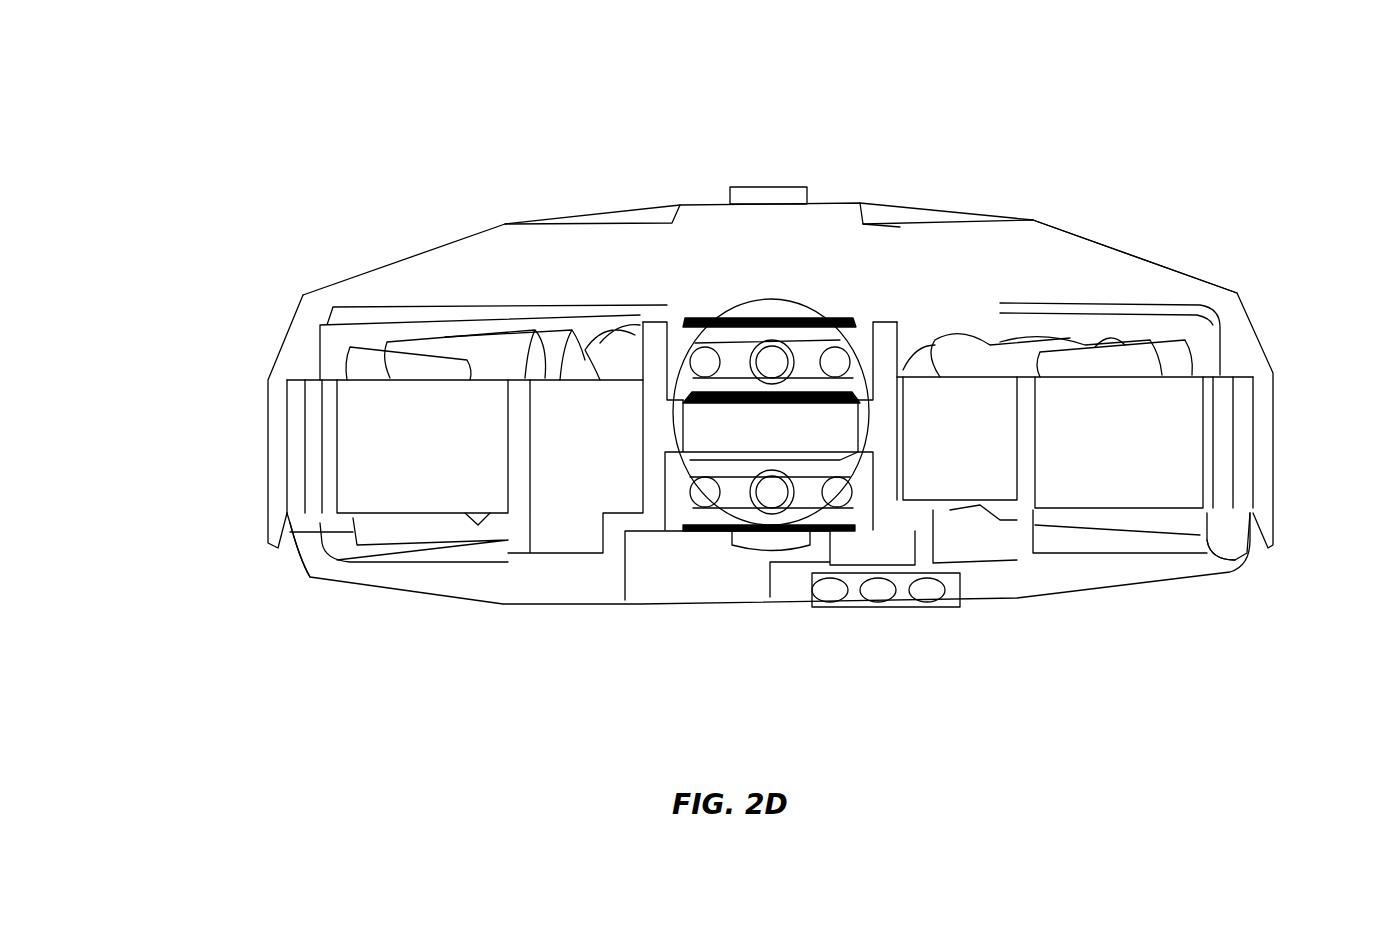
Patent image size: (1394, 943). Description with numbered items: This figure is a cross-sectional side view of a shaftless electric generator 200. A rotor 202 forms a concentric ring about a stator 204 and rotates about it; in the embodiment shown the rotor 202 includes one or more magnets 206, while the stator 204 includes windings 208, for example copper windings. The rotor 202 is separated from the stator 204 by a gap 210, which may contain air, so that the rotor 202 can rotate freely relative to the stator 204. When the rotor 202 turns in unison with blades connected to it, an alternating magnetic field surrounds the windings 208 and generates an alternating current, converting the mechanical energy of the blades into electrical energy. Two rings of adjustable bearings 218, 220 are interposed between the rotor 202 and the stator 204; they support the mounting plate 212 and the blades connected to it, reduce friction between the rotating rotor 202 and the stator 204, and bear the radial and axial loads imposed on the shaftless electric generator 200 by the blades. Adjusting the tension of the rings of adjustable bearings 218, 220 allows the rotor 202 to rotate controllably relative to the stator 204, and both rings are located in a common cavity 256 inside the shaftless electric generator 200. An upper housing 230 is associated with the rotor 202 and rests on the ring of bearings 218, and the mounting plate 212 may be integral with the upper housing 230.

The shaftless electric generator 200 is at (340, 105).
The rotor 202 is at (290, 338).
The stator 204 is at (300, 563).
The magnets 206 is at (293, 420).
The windings 208 is at (470, 333).
The gap 210 is at (330, 488).
The mounting plate 212 is at (860, 203).
The adjustable bearing 218 is at (708, 355).
The adjustable bearing 220 is at (705, 500).
The upper housing 230 is at (1130, 255).
The common cavity 256 is at (835, 508).